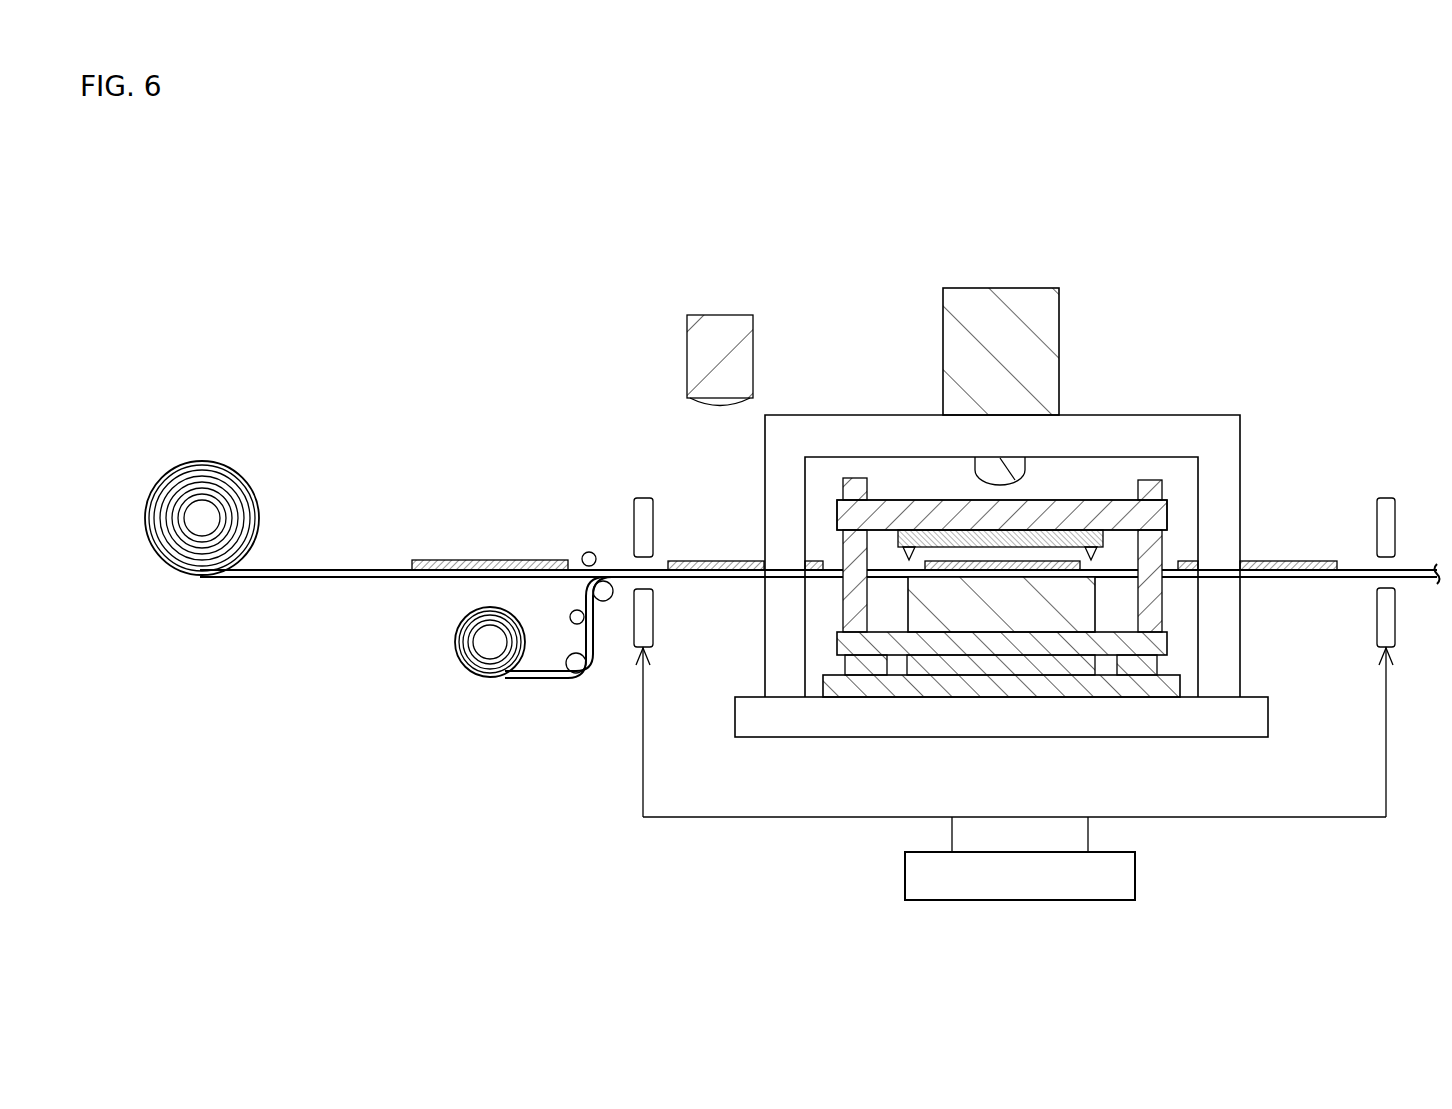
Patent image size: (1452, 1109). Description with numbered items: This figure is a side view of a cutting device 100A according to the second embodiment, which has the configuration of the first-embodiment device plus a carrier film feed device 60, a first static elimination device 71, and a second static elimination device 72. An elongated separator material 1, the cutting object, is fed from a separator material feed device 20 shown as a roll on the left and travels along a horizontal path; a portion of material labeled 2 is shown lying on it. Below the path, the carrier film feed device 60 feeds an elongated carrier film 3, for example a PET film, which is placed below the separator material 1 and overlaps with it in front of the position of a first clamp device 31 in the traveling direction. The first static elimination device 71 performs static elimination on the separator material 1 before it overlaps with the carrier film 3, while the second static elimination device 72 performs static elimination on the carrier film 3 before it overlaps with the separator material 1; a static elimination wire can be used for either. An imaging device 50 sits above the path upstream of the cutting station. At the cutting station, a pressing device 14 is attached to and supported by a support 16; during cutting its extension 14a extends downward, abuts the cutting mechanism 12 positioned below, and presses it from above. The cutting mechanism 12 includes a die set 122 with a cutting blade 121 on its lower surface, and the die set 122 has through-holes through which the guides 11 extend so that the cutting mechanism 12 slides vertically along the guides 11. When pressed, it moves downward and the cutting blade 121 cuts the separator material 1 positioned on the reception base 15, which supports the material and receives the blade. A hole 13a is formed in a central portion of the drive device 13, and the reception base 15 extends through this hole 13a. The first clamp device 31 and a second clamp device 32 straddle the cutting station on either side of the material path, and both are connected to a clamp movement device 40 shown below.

The cutting device 100A is at (528, 325).
The separator material 1 is at (342, 569).
The sheet member on web 2 is at (490, 558).
The carrier film 3 is at (540, 681).
The guides 11 is at (843, 592).
The cutting mechanism 12 is at (1072, 498).
The cutting blade 121 is at (1106, 542).
The die set 122 is at (1115, 498).
The drive device 13 is at (1168, 645).
The hole 13a is at (1108, 662).
The pressing device 14 is at (943, 306).
The extension 14a is at (965, 465).
The reception base 15 is at (907, 613).
The support 16 is at (1240, 436).
The separator material feed device 20 is at (199, 438).
The first clamp device 31 is at (643, 497).
The second clamp device 32 is at (1386, 497).
The clamp movement device 40 is at (1135, 875).
The imaging device 50 is at (687, 346).
The carrier film feed device 60 is at (437, 663).
The first static elimination device 71 is at (589, 551).
The second static elimination device 72 is at (572, 623).